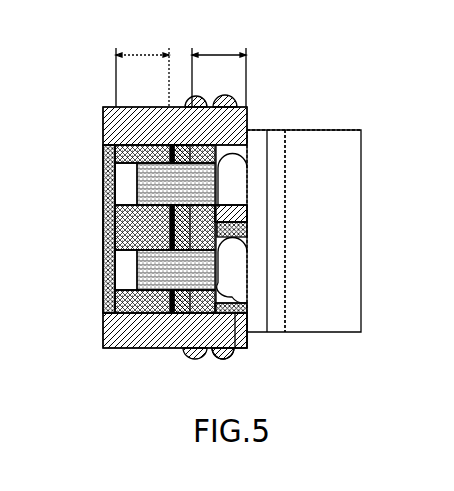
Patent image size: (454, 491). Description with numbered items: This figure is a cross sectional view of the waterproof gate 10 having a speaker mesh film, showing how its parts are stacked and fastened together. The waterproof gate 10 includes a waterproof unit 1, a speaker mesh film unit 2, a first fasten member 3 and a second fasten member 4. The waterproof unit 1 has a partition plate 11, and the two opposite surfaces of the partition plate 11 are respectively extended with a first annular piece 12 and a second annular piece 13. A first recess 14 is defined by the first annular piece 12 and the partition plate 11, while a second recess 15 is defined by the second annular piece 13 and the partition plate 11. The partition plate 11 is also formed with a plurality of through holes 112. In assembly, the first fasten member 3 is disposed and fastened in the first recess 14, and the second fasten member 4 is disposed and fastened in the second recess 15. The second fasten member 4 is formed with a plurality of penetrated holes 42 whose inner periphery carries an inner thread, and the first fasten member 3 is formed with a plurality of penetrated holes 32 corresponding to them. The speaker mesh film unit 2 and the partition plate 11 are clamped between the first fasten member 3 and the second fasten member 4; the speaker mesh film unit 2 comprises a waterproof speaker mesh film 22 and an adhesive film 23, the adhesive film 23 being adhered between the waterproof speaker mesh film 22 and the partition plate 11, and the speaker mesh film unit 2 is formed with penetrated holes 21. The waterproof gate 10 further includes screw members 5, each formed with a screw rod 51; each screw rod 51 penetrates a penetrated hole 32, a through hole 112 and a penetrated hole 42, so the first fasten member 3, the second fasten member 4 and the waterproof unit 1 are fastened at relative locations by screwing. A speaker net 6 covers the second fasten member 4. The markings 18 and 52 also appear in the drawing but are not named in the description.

The waterproof unit 1 is at (141, 350).
The speaker mesh film unit 2 is at (46, 216).
The first fasten member 3 is at (238, 257).
The second fasten member 4 is at (137, 208).
The screw member 5 is at (392, 272).
The speaker net 6 is at (110, 182).
The waterproof gate 10 is at (240, 33).
The partition plate 11 is at (228, 210).
The first annular piece 12 is at (250, 342).
The second annular piece 13 is at (103, 330).
The first recess 14 is at (242, 156).
The second recess 15 is at (122, 156).
The thread 18 is at (226, 360).
The penetrated holes 21 is at (128, 256).
The waterproof speaker mesh film 22 is at (103, 243).
The adhesive film 23 is at (140, 215).
The penetrated holes 32 is at (290, 332).
The penetrated holes 42 is at (103, 287).
The screw rod 51 is at (242, 280).
The inner surface 52 is at (228, 273).
The through holes 112 is at (127, 272).